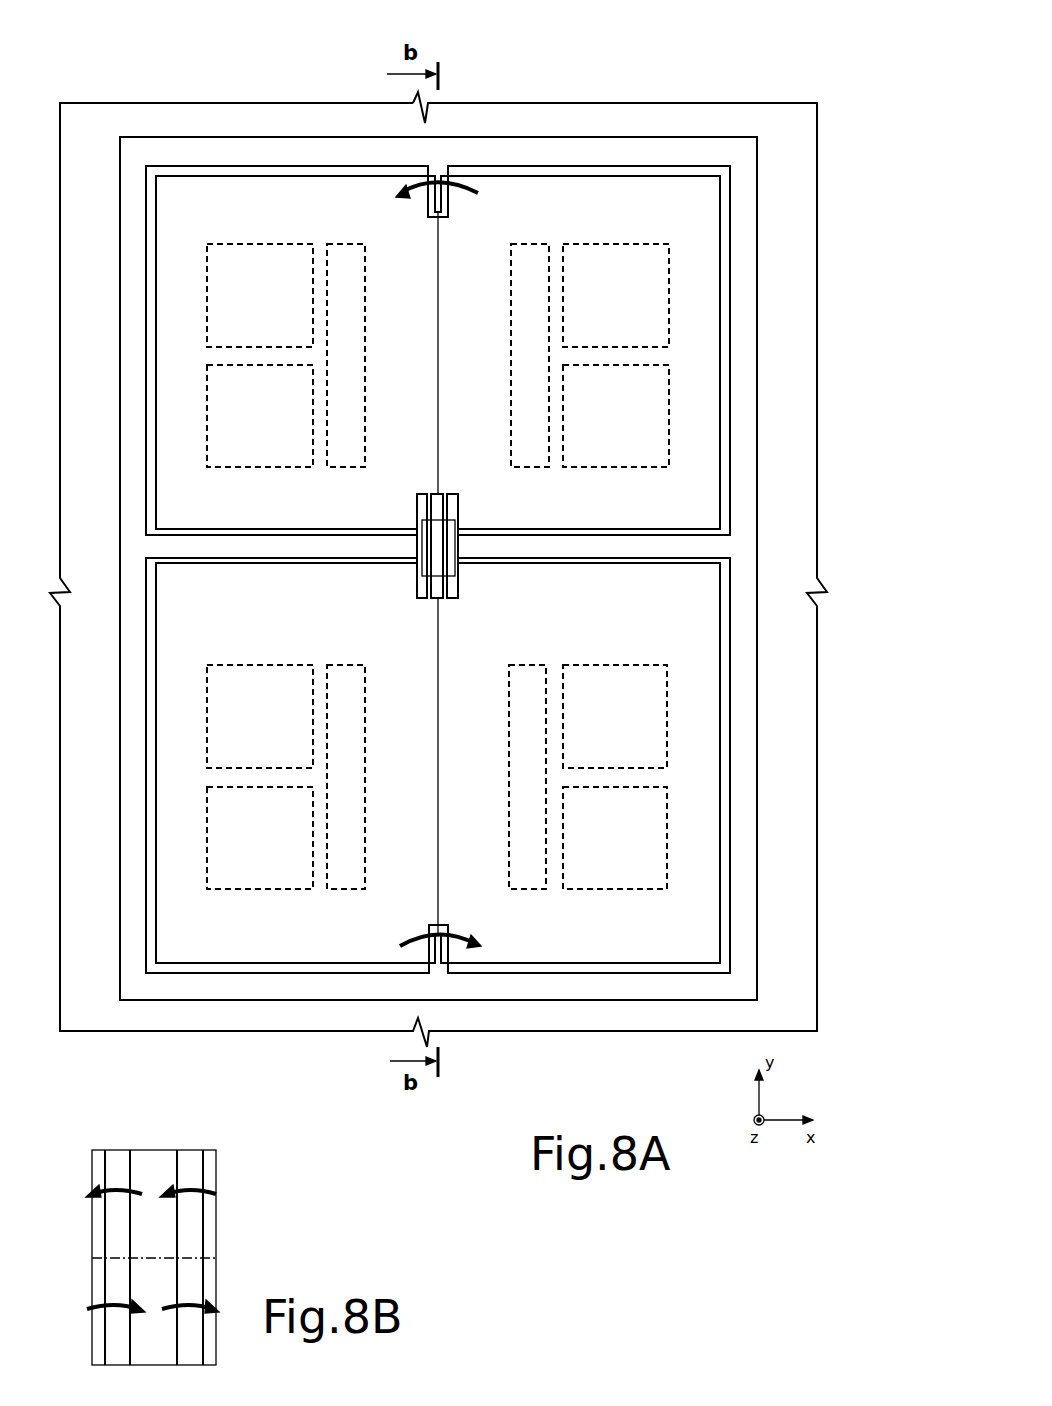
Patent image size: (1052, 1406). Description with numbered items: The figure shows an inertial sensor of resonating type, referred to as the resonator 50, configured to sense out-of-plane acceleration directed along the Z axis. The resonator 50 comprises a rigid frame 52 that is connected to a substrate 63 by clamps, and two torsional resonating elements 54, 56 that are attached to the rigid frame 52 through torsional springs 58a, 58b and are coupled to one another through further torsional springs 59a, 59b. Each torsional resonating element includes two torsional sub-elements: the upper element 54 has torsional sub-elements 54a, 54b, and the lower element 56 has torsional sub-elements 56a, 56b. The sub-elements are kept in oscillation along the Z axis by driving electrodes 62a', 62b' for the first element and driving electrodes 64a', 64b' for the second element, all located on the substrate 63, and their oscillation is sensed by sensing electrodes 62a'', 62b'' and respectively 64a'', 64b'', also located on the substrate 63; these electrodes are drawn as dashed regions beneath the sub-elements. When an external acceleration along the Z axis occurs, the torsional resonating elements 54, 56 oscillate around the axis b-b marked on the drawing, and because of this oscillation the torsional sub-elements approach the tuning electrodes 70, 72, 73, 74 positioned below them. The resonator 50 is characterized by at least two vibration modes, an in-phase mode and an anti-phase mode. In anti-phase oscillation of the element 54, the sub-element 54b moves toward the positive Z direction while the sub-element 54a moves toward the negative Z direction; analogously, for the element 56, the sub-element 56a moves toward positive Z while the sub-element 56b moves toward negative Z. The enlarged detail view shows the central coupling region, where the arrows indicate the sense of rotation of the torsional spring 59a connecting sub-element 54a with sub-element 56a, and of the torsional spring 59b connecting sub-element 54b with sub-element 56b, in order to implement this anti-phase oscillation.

In FIG. 8A, the resonator 50 is at (142, 65).
In FIG. 8A, the rigid frame 52 is at (735, 150).
In FIG. 8A, the torsional resonating element 54 is at (438, 267).
In FIG. 8A, the torsional sub-element 54a is at (292, 350).
In FIG. 8A, the torsional sub-element 54b is at (584, 350).
In FIG. 8A, the torsional resonating element 56 is at (501, 765).
In FIG. 8A, the torsional sub-element 56a is at (292, 765).
In FIG. 8A, the torsional sub-element 56b is at (584, 765).
In FIG. 8A, the torsional spring 58a is at (437, 178).
In FIG. 8A, the torsional spring 58b is at (437, 968).
In FIG. 8A, the torsional spring 59a is at (430, 512).
In FIG. 8B, the torsional spring 59a is at (110, 1172).
In FIG. 8A, the torsional spring 59b is at (447, 578).
In FIG. 8B, the torsional spring 59b is at (192, 1175).
In FIG. 8A, the sensing electrode 62a'' is at (267, 271).
In FIG. 8A, the driving electrode 62a' is at (260, 447).
In FIG. 8A, the sensing electrode 62b'' is at (616, 270).
In FIG. 8A, the driving electrode 62b' is at (616, 447).
In FIG. 8A, the substrate 63 is at (689, 117).
In FIG. 8A, the sensing electrode 64a'' is at (260, 691).
In FIG. 8A, the driving electrode 64a' is at (260, 868).
In FIG. 8A, the sensing electrode 64b'' is at (615, 693).
In FIG. 8A, the driving electrode 64b' is at (615, 868).
In FIG. 8A, the tuning electrode 70 is at (341, 463).
In FIG. 8A, the tuning electrode 72 is at (539, 465).
In FIG. 8A, the tuning electrode 73 is at (343, 882).
In FIG. 8A, the tuning electrode 74 is at (540, 878).